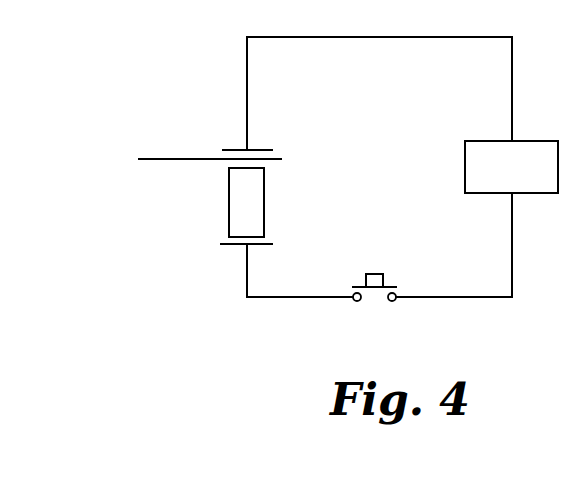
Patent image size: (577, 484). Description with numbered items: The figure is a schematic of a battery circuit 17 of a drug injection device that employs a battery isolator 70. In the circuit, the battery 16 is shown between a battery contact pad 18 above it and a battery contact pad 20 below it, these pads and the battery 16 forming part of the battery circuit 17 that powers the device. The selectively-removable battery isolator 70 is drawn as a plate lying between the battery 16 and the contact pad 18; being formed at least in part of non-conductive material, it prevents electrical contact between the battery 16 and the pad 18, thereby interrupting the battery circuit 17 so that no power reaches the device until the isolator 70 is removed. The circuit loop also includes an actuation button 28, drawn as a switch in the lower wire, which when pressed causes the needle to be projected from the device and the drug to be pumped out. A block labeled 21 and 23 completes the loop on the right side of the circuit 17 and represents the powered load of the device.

The battery circuit 17 is at (212, 90).
The battery isolator 70 is at (156, 159).
The battery contact pad 18 is at (267, 150).
The battery 16 is at (229, 202).
The battery contact pad 20 is at (267, 244).
The power supply 21 is at (511, 167).
The controller 23 is at (511, 167).
The actuation button 28 is at (377, 273).